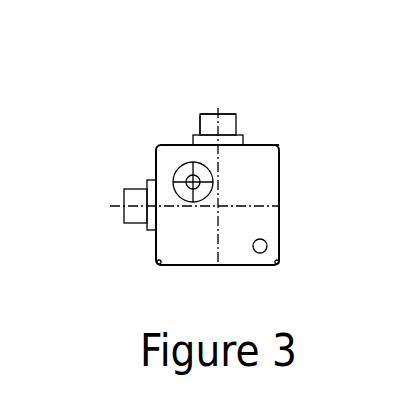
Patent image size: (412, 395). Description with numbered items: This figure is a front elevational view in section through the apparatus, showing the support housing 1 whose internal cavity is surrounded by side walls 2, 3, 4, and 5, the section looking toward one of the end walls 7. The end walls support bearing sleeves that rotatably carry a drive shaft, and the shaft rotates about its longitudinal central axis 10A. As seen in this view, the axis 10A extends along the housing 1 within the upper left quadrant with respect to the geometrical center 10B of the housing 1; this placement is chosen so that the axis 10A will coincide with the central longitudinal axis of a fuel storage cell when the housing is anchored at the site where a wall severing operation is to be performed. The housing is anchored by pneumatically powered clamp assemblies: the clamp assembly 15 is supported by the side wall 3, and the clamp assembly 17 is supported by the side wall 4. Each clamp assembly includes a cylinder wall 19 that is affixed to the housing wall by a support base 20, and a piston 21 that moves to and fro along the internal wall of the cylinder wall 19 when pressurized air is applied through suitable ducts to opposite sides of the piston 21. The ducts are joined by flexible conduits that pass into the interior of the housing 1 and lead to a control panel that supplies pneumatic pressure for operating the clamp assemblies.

The support housing 1 is at (241, 176).
The side wall 2 is at (266, 103).
The side wall 3 is at (324, 198).
The side wall 4 is at (246, 291).
The side wall 5 is at (104, 193).
The end wall 7 is at (302, 223).
The longitudinal central axis 10A is at (190, 181).
The geometrical center 10B is at (160, 251).
The pneumatically powered clamp assembly 15 is at (258, 82).
The pneumatically powered clamp assembly 17 is at (108, 221).
The cylinder wall 19 is at (156, 95).
The support base 20 is at (161, 116).
The piston 21 is at (182, 72).